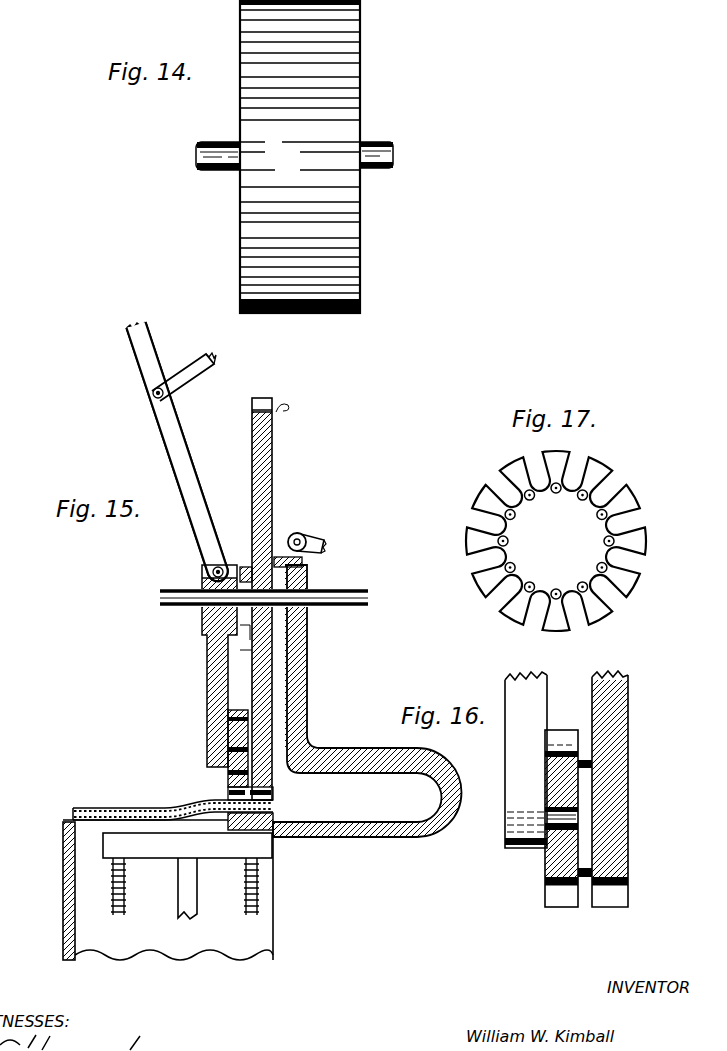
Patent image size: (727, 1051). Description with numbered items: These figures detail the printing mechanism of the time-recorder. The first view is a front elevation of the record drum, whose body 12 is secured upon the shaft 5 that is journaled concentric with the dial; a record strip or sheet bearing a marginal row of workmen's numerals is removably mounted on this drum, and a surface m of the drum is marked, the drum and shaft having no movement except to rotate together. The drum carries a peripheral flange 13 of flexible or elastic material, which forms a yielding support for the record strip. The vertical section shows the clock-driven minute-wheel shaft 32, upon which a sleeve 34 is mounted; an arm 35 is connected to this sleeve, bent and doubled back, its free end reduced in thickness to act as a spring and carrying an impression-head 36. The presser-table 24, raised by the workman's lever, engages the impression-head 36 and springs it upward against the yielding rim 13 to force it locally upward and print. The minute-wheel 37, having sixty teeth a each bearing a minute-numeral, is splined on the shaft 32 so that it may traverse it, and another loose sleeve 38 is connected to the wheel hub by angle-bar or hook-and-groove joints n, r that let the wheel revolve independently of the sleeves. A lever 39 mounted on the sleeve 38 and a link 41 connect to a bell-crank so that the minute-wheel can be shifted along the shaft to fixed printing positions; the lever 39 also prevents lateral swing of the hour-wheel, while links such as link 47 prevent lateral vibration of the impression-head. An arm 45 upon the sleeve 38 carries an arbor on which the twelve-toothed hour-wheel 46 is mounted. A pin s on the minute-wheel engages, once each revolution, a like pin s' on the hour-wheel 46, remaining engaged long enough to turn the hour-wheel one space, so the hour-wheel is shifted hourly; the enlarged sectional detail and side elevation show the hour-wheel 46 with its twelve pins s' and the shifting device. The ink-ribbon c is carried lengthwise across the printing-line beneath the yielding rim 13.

In FIG. 14, the body 12 is at (291, 156).
In FIG. 14, the shaft 5 is at (304, 156).
In FIG. 14, the drum surface m is at (300, 180).
In FIG. 15, the lever 39 is at (177, 451).
In FIG. 15, the link 41 is at (184, 380).
In FIG. 15, the sleeve 38 is at (205, 666).
In FIG. 15, the hook-and-groove joint r is at (243, 566).
In FIG. 15, the minute-wheel 37 is at (276, 599).
In FIG. 16, the minute-wheel 37 is at (624, 789).
In FIG. 15, the teeth a is at (262, 794).
In FIG. 16, the teeth a is at (595, 889).
In FIG. 15, the angle-bar joint n is at (280, 557).
In FIG. 15, the link 47 is at (317, 539).
In FIG. 15, the sleeve 34 is at (309, 656).
In FIG. 15, the arm 35 is at (367, 701).
In FIG. 15, the minute-wheel shaft 32 is at (160, 600).
In FIG. 15, the hour-wheel 46 is at (227, 781).
In FIG. 16, the hour-wheel 46 is at (542, 818).
In FIG. 17, the hour-wheel 46 is at (556, 541).
In FIG. 15, the peripheral flange 13 is at (112, 807).
In FIG. 15, the ribbon c is at (74, 812).
In FIG. 15, the impression-head 36 is at (276, 835).
In FIG. 15, the presser-table 24 is at (168, 890).
In FIG. 16, the arm 45 is at (526, 760).
In FIG. 16, the pin s is at (615, 772).
In FIG. 16, the pin or stud s' is at (577, 822).
In FIG. 17, the pin or stud s' is at (556, 541).